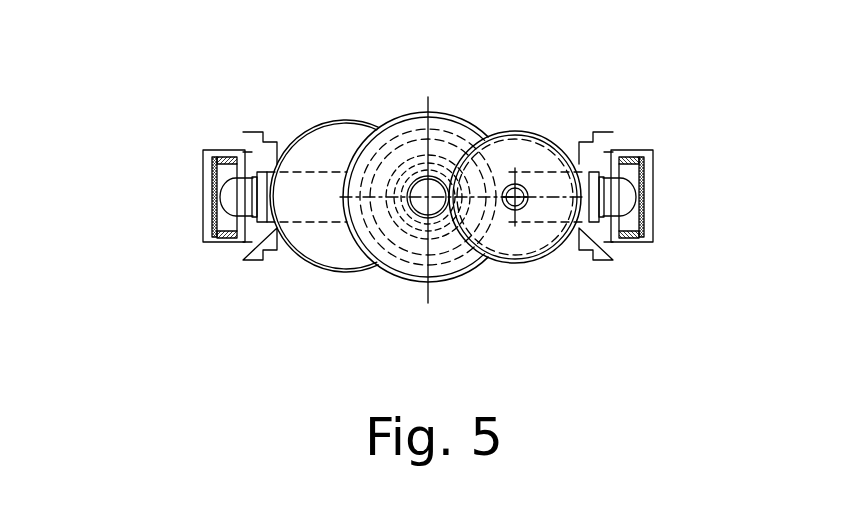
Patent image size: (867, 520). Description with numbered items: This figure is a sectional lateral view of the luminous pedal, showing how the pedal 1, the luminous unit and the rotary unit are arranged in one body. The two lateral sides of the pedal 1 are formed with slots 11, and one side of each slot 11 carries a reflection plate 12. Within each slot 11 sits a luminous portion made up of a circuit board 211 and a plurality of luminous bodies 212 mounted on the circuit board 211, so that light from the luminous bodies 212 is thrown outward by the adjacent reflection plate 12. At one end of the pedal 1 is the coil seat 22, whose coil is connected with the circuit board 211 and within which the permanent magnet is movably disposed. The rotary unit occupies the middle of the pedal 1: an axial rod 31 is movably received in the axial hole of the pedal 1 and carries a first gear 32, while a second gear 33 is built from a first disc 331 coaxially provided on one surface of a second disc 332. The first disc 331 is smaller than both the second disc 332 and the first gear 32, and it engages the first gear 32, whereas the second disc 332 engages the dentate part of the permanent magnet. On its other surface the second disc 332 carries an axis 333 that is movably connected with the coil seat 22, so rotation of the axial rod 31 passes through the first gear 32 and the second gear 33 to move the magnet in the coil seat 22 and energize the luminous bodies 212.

The pedal 1 is at (397, 80).
The slot 11 is at (248, 168).
The reflection plate 12 is at (212, 178).
The circuit board 211 is at (247, 237).
The luminous body 212 is at (227, 197).
The coil seat 22 is at (321, 226).
The axial rod 31 is at (432, 187).
The first gear 32 is at (388, 130).
The second gear 33 is at (561, 256).
The first disc 331 is at (518, 186).
The second disc 332 is at (522, 257).
The axis 333 is at (531, 191).